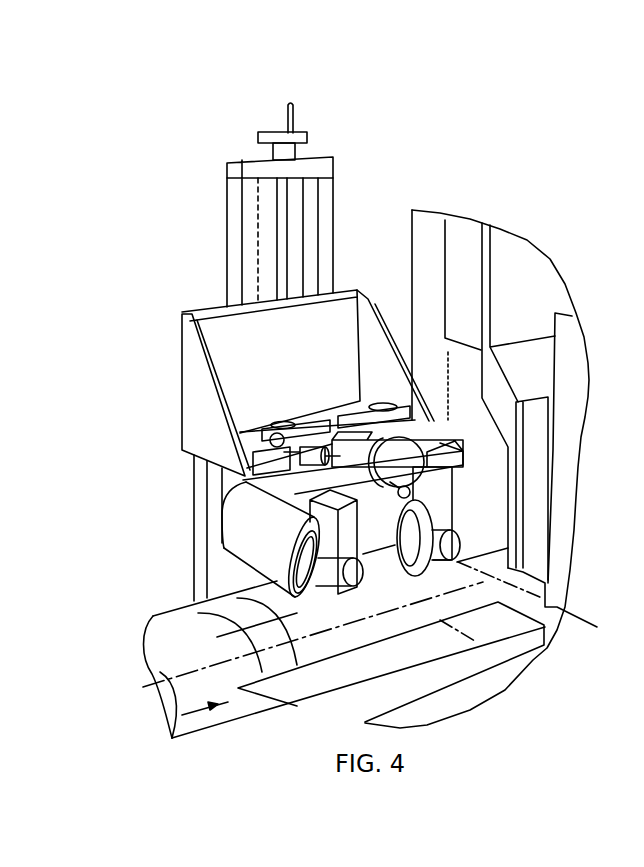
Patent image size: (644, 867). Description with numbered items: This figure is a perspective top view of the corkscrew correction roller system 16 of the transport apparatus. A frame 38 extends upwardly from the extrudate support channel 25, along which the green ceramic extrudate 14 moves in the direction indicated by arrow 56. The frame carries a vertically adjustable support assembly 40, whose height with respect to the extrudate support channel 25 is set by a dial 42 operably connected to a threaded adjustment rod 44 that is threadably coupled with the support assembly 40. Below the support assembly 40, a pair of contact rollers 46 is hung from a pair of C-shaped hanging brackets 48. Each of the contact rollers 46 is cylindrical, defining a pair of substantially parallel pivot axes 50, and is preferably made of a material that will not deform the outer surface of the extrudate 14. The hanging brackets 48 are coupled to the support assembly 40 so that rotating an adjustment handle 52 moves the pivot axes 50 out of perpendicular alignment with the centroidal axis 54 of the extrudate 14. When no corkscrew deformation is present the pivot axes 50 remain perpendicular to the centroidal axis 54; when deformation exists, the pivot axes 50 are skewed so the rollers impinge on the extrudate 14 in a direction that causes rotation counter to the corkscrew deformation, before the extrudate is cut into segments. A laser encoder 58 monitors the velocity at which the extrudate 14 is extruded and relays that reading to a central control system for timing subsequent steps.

The green ceramic extrudate 14 is at (187, 613).
The corkscrew correction roller system 16 is at (497, 423).
The extrudate support channel 25 is at (455, 688).
The frame 38 is at (198, 510).
The support assembly 40 is at (195, 435).
The dial 42 is at (307, 135).
The threaded adjustment rod 44 is at (290, 252).
The contact rollers 46 is at (245, 543).
The C-shaped hanging brackets 48 is at (350, 530).
The pivot axes 50 is at (567, 615).
The adjustment handle 52 is at (417, 463).
The centroidal axis 54 is at (150, 690).
The arrow 56 is at (216, 710).
The laser encoder 58 is at (475, 438).